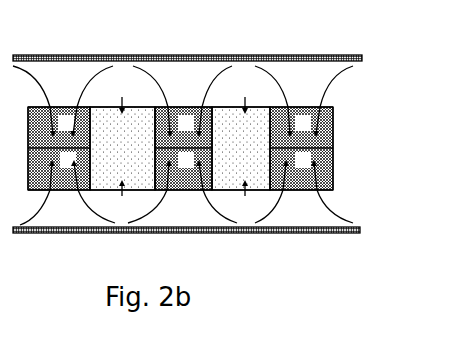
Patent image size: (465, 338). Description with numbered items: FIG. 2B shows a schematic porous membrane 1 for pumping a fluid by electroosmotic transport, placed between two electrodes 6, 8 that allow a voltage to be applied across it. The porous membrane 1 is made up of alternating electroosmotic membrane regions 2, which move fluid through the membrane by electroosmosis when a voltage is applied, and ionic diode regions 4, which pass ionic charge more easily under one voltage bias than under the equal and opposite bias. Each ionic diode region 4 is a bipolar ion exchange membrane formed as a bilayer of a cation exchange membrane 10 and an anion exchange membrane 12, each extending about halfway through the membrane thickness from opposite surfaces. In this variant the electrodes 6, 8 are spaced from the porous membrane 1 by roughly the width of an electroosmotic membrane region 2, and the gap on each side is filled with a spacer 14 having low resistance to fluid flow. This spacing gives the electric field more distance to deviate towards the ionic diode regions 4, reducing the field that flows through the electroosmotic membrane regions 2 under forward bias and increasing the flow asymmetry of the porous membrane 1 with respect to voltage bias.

The porous membrane 1 is at (377, 95).
The electroosmotic membrane regions 2 is at (256, 177).
The ionic diode regions 4 is at (337, 104).
The electrode 6 is at (177, 56).
The electrode 8 is at (205, 233).
The cation exchange membrane 10 is at (324, 108).
The anion exchange membrane 12 is at (333, 188).
The spacer 14 is at (65, 80).